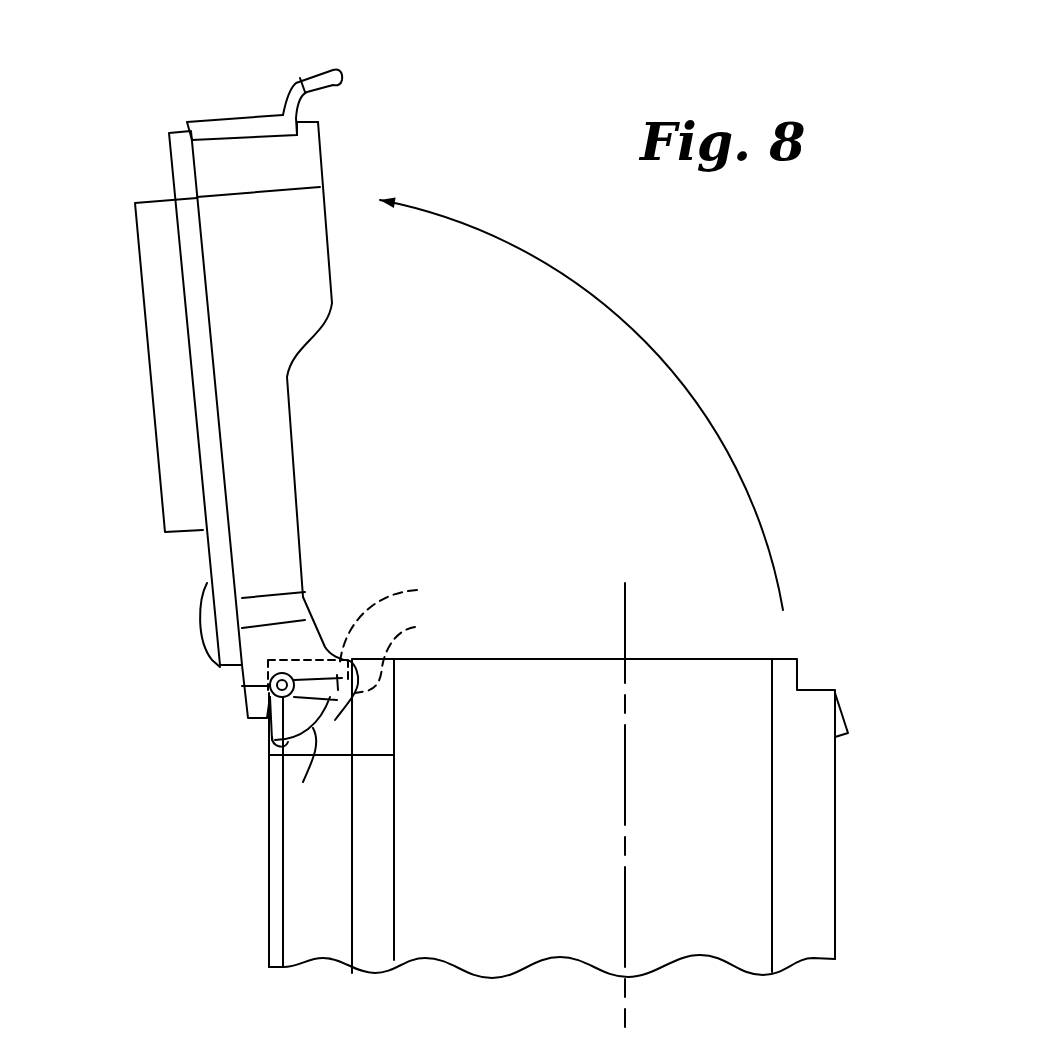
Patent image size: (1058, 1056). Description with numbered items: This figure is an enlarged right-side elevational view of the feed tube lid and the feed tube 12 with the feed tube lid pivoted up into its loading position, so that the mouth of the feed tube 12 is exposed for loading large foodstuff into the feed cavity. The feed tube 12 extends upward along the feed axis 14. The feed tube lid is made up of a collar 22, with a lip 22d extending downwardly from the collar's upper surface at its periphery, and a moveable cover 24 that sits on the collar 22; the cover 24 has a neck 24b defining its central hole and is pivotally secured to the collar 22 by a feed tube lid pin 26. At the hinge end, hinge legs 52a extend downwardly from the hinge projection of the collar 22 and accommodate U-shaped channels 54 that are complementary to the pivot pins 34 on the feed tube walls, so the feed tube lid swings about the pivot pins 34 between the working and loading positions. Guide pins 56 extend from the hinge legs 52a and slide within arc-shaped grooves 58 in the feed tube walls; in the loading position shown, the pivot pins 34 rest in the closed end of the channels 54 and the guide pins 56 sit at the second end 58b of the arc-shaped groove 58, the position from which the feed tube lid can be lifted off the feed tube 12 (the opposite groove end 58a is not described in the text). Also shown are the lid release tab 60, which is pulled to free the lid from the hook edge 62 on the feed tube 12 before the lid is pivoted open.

The feed tube 12 is at (805, 835).
The feed axis 14 is at (625, 600).
The collar 22 is at (298, 385).
The lip 22d is at (308, 245).
The cover 24 is at (176, 163).
The neck 24b is at (160, 320).
The feed tube lid pin 26 is at (207, 614).
The pivot pin 34 is at (268, 682).
The hinge leg 52a is at (330, 660).
The U-shaped channel 54 is at (273, 730).
The guide pin 56 is at (409, 653).
The arc-shaped groove 58 is at (303, 782).
The spring end 58a is at (273, 747).
The second end 58b is at (409, 620).
The lid release tab 60 is at (322, 66).
The hook edge 62 is at (850, 732).